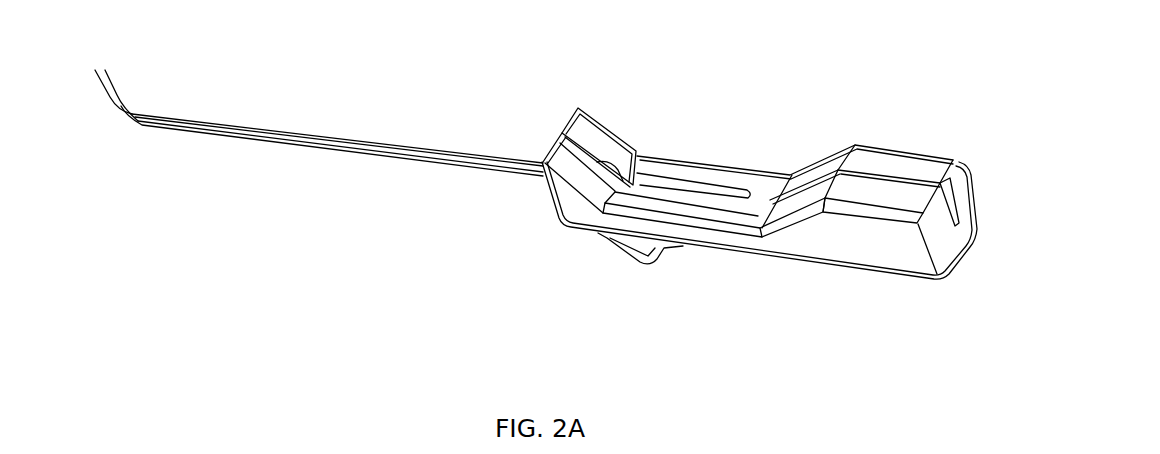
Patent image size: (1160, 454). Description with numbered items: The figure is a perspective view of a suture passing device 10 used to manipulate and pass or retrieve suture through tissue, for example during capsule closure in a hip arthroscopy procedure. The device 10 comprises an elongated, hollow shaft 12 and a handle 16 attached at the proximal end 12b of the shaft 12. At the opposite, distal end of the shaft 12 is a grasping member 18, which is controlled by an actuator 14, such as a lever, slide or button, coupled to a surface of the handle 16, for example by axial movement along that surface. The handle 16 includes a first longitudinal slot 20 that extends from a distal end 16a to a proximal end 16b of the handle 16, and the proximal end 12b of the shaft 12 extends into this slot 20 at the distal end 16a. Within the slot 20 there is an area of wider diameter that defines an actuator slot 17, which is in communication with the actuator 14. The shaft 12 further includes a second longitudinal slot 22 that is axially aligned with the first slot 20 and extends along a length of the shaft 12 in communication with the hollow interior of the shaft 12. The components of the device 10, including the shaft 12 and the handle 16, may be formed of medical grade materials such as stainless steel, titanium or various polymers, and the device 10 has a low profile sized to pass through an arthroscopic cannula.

The suture passing device 10 is at (237, 108).
The shaft 12 is at (270, 144).
The proximal end of the shaft 12b is at (632, 150).
The actuator 14 is at (667, 263).
The handle 16 is at (862, 256).
The distal end of the handle 16a is at (570, 117).
The proximal end of the handle 16b is at (957, 158).
The actuator slot 17 is at (718, 192).
The grasping member 18 is at (120, 74).
The first longitudinal slot 20 is at (868, 174).
The second longitudinal slot 22 is at (364, 140).